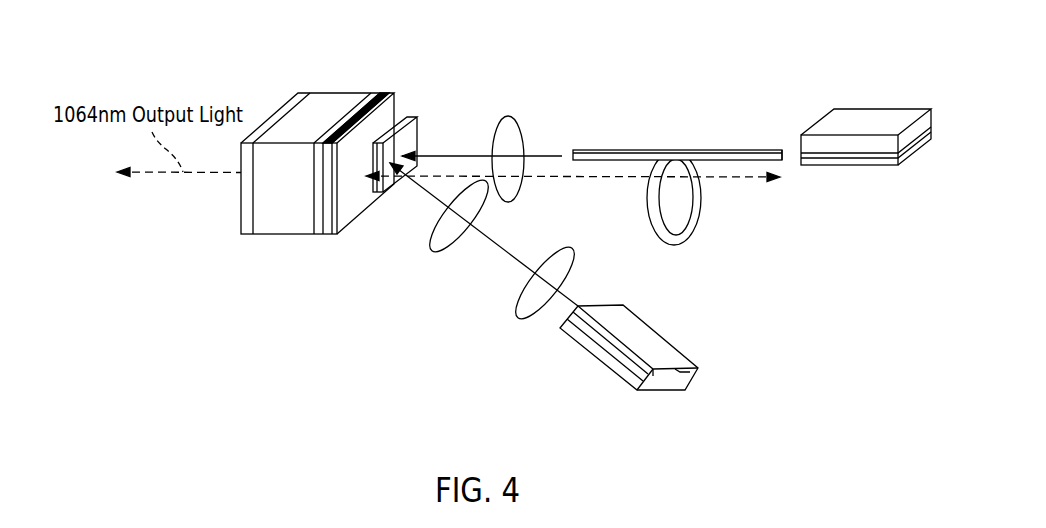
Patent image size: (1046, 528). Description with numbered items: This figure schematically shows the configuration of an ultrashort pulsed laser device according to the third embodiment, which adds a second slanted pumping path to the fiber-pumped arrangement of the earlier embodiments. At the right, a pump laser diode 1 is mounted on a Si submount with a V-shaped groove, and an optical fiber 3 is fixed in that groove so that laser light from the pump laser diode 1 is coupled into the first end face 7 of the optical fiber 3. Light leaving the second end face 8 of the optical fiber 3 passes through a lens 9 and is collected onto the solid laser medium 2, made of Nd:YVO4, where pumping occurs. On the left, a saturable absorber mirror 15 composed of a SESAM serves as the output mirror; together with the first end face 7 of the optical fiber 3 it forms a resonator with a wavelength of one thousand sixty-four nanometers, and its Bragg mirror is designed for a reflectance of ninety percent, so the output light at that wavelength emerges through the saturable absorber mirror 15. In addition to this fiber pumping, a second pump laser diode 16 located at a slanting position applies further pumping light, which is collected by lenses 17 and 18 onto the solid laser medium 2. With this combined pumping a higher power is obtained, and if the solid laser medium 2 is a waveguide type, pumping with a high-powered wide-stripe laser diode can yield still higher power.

The pump laser diode 1 is at (872, 107).
The solid laser medium 2 is at (410, 118).
The optical fiber 3 is at (695, 213).
The first end face 7 is at (785, 153).
The second end face 8 is at (566, 148).
The lens 9 is at (510, 115).
The saturable absorber mirror 15 is at (337, 95).
The second pump laser diode 16 is at (600, 360).
The lens 17 is at (517, 317).
The lens 18 is at (430, 250).